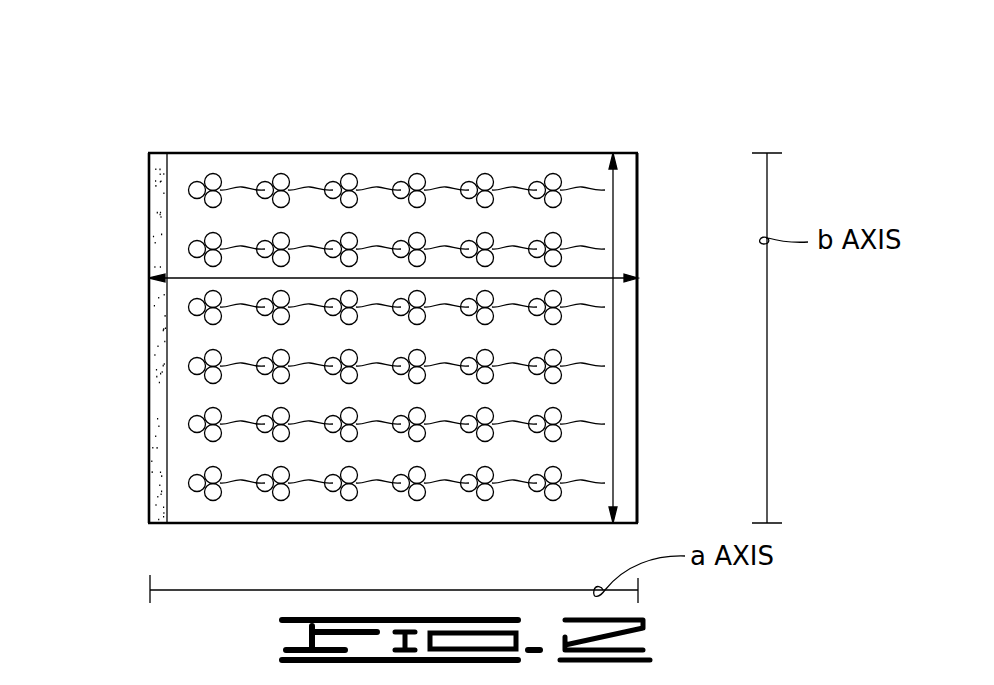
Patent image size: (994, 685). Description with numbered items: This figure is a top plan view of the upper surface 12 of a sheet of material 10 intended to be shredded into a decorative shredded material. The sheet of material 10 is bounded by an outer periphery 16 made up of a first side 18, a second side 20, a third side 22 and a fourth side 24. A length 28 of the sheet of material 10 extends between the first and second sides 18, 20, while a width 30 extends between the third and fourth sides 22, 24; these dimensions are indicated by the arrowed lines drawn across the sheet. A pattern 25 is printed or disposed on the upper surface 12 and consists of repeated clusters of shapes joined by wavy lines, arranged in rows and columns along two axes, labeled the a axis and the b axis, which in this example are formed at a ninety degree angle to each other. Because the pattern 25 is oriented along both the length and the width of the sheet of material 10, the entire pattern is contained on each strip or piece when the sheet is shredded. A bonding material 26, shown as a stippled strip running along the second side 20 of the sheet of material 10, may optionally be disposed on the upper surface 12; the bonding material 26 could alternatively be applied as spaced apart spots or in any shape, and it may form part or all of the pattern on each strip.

The sheet of material 10 is at (376, 316).
The upper surface 12 is at (331, 300).
The outer periphery 16 is at (435, 523).
The first side 18 is at (640, 423).
The second side 20 is at (148, 408).
The third side 22 is at (517, 153).
The fourth side 24 is at (257, 523).
The pattern 25 is at (199, 186).
The bonding material 26 is at (155, 153).
The length 28 is at (592, 282).
The width 30 is at (606, 328).